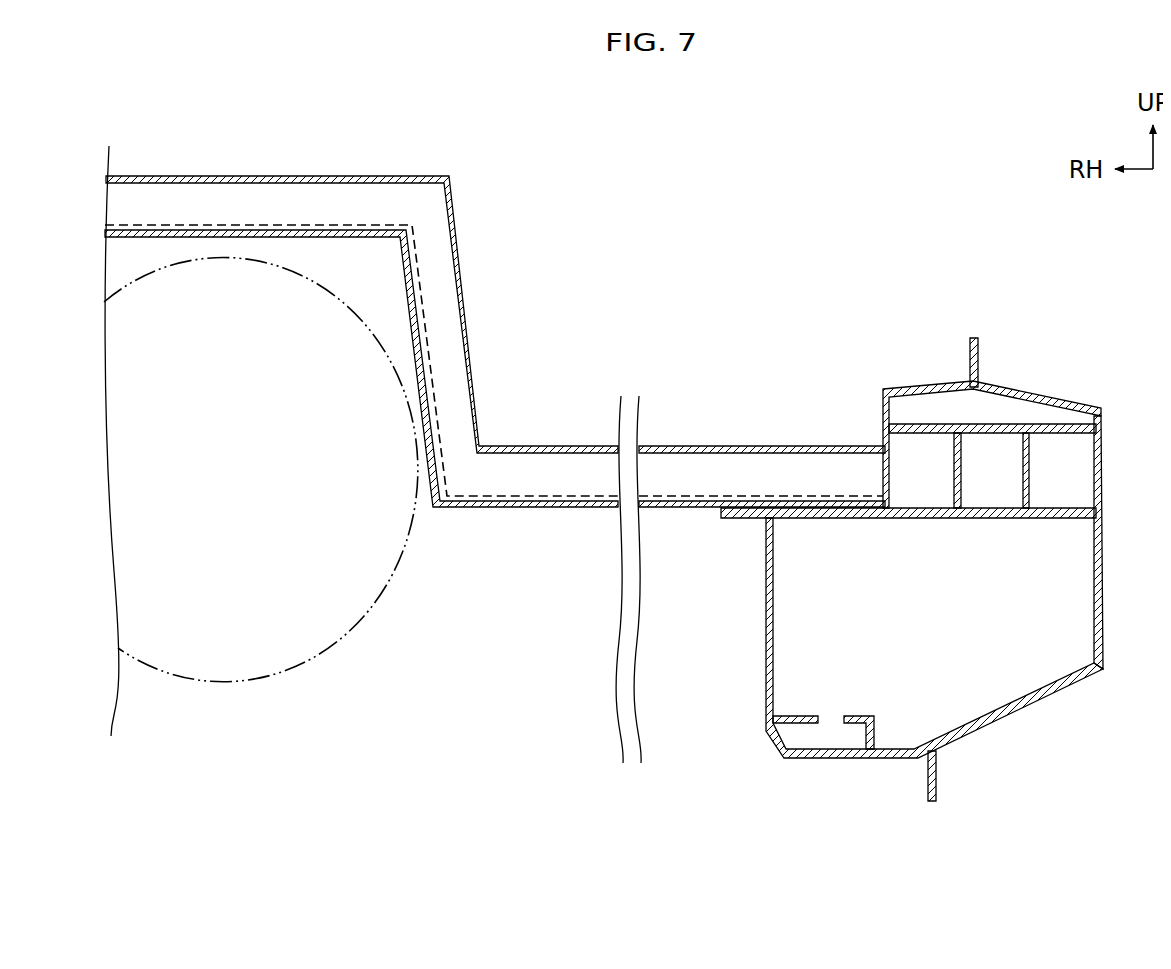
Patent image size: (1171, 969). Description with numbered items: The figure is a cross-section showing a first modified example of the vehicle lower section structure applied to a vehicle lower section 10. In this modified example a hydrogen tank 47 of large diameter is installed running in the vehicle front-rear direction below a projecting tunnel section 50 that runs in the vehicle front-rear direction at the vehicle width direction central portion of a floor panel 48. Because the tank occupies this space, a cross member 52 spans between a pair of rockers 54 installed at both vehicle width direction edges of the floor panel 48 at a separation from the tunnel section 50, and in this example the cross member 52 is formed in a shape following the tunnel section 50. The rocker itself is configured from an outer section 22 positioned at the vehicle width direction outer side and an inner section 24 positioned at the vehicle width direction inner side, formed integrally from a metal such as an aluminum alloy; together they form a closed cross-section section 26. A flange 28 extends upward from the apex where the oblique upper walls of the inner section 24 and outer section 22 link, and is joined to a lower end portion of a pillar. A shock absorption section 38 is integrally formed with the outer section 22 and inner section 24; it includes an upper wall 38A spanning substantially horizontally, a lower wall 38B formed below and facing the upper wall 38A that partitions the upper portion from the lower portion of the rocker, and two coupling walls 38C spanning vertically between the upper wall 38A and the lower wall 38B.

The vehicle lower section 10 is at (1104, 323).
The outer section 22 is at (1105, 532).
The inner section 24 is at (879, 424).
The closed cross-section section 26 is at (912, 637).
The flange 28 is at (977, 343).
The shock absorption section 38 is at (908, 463).
The upper wall 38A is at (913, 423).
The lower wall 38B is at (908, 517).
The coupling walls 38C is at (960, 473).
The hydrogen tank 47 is at (210, 652).
The floor panel 48 is at (545, 508).
The tunnel section 50 is at (276, 226).
The cross member 52 is at (697, 468).
The rockers 54 is at (1105, 570).